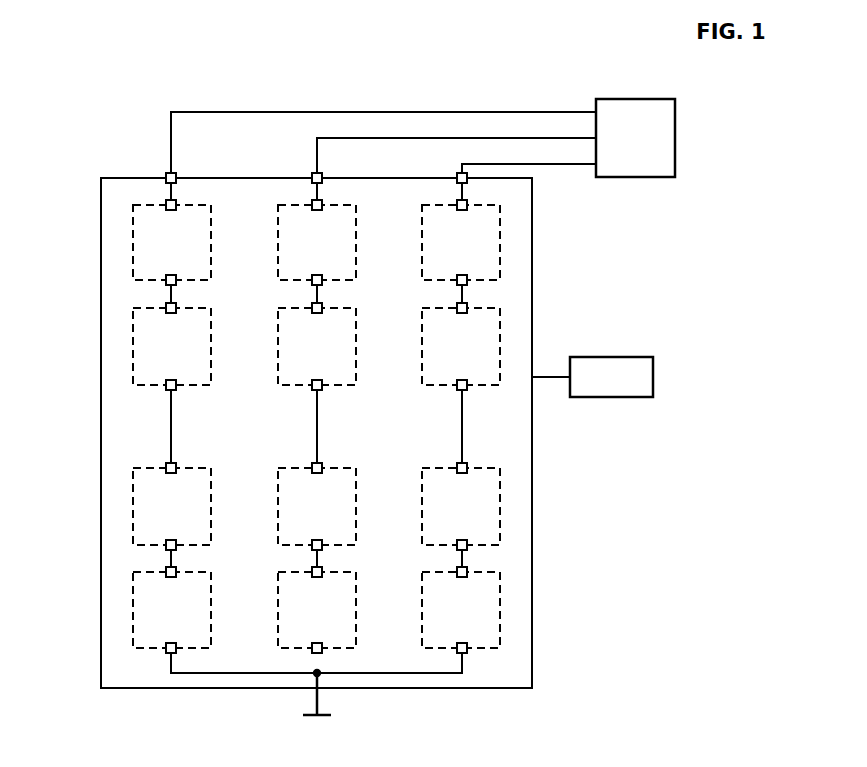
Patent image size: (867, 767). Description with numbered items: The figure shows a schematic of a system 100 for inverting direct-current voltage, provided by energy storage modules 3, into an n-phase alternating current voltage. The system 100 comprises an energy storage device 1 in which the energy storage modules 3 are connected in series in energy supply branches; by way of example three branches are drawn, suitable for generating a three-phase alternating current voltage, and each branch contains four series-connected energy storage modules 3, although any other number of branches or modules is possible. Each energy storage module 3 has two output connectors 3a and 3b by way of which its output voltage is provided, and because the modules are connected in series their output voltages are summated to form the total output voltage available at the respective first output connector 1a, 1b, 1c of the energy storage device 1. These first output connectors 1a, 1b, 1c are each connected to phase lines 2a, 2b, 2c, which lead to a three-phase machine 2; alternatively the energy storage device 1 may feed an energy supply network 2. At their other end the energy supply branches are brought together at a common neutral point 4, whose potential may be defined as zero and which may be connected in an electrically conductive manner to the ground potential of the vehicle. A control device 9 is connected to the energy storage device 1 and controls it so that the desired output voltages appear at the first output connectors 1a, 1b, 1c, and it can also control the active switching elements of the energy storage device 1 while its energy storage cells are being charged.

The system 100 is at (112, 100).
The energy storage device 1 is at (534, 204).
The first output connector 1a is at (166, 176).
The first output connector 1b is at (312, 176).
The first output connector 1c is at (457, 176).
The three-phase machine 2 is at (634, 98).
The phase line 2a is at (243, 111).
The phase line 2b is at (377, 137).
The phase line 2c is at (510, 163).
The energy storage module 3 is at (211, 243).
The output connector 3a is at (312, 203).
The output connector 3b is at (312, 282).
The common neutral point 4 is at (244, 676).
The control device 9 is at (610, 356).